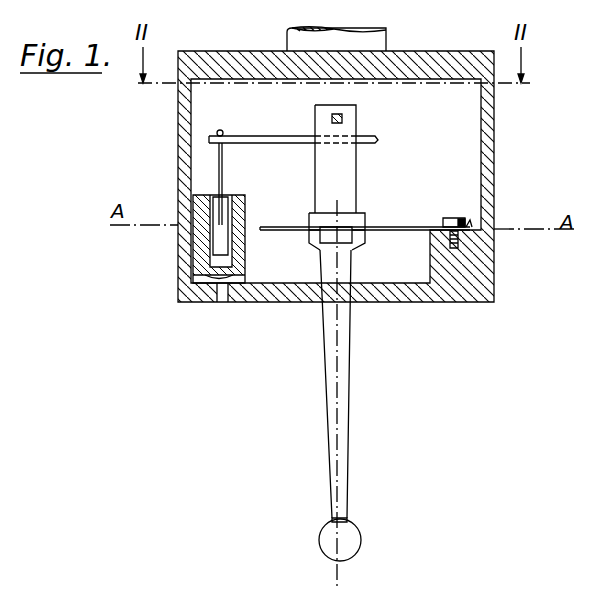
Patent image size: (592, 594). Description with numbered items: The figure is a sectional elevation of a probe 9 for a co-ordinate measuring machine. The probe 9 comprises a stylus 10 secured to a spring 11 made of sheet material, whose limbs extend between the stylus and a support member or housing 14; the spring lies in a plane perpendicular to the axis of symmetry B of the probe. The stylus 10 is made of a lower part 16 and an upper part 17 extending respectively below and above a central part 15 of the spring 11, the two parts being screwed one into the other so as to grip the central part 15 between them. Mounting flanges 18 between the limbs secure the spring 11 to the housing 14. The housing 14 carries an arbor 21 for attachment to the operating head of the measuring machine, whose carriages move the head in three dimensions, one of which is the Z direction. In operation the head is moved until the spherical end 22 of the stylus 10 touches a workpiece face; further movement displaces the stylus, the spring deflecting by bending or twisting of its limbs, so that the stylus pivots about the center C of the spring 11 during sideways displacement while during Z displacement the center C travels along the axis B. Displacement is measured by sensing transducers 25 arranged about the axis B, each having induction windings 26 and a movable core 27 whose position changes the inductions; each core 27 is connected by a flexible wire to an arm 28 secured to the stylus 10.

The probe 9 is at (178, 108).
The stylus 10 is at (351, 370).
The spring 11 is at (413, 223).
The housing 14 is at (496, 135).
The central part 15 is at (352, 226).
The lower stylus part 16 is at (310, 237).
The upper stylus part 17 is at (312, 215).
The mounting flange 18 is at (470, 228).
The arbor 21 is at (380, 38).
The spherical end 22 is at (361, 543).
The sensing transducer 25 is at (203, 268).
The induction windings 26 is at (205, 198).
The movable core 27 is at (220, 230).
The arm 28 is at (283, 136).
The axis of symmetry B is at (338, 445).
The center of the spring C is at (340, 231).
The Z direction Z is at (340, 572).